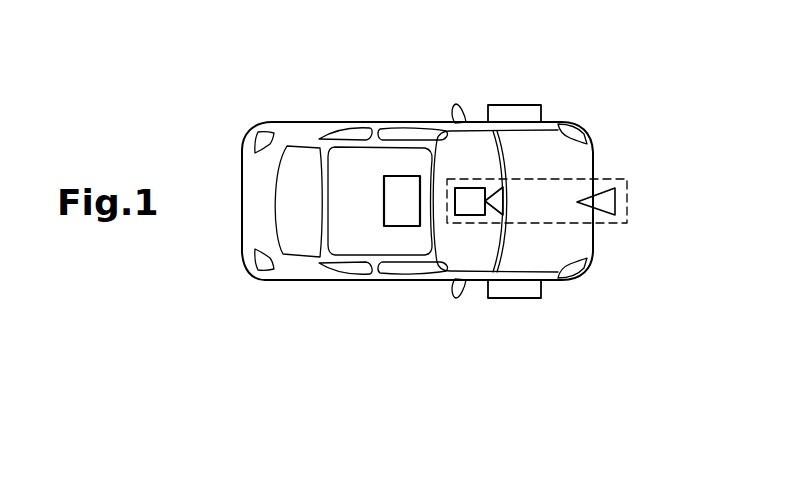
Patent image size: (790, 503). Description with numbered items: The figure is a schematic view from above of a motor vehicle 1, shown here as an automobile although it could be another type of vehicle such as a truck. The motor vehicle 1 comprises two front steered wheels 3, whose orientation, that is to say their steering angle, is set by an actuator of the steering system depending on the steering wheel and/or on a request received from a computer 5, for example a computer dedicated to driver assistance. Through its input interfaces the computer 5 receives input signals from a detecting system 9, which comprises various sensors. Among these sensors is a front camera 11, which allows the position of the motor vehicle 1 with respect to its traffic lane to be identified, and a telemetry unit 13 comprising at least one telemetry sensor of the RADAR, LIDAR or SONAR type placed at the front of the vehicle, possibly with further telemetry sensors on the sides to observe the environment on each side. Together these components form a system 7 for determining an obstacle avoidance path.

The motor vehicle 1 is at (417, 154).
The front steered wheels 3 is at (518, 105).
The computer 5 is at (393, 208).
The system for determining an obstacle avoidance path 7 is at (426, 105).
The detecting system 9 is at (522, 225).
The front camera 11 is at (467, 198).
The telemetry unit 13 is at (607, 204).